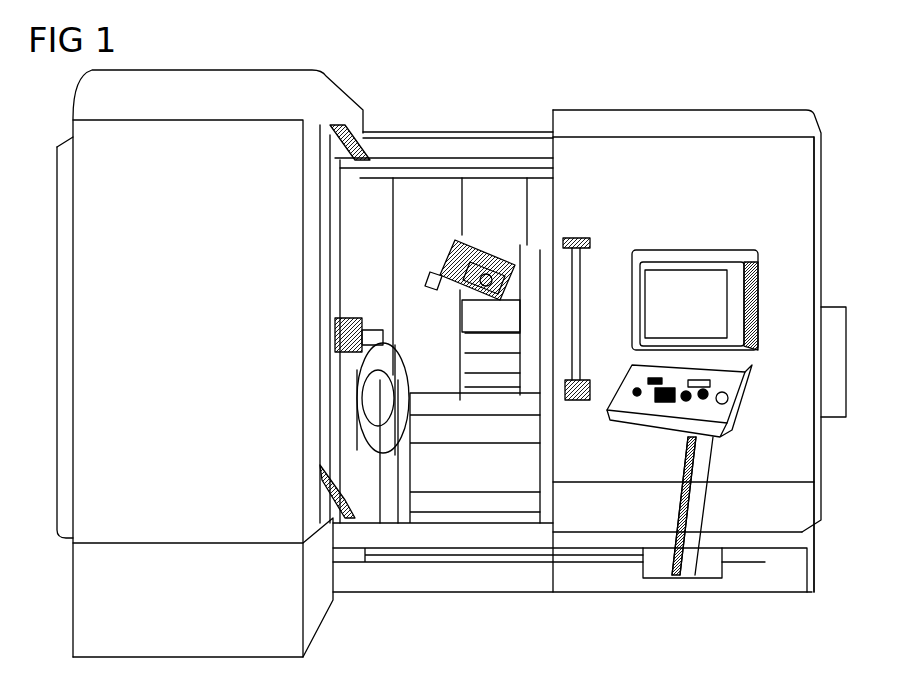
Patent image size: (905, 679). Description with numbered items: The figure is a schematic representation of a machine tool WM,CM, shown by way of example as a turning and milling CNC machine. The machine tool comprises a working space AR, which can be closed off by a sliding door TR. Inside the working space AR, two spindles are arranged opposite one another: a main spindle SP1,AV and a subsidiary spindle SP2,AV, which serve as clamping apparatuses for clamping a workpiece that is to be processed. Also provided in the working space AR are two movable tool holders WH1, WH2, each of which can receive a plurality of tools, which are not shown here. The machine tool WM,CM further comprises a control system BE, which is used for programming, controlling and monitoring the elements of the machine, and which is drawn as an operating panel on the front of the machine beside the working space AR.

The machine tool / turning and milling CNC machine WM,CM is at (696, 93).
The working space AR is at (471, 472).
The main spindle / clamping apparatus SP1,AV is at (356, 338).
The subsidiary spindle / clamping apparatus SP2,AV is at (527, 262).
The tool holder WH1 is at (447, 258).
The tool holder WH2 is at (360, 398).
The control system BE is at (690, 268).
The sliding door TR is at (795, 443).